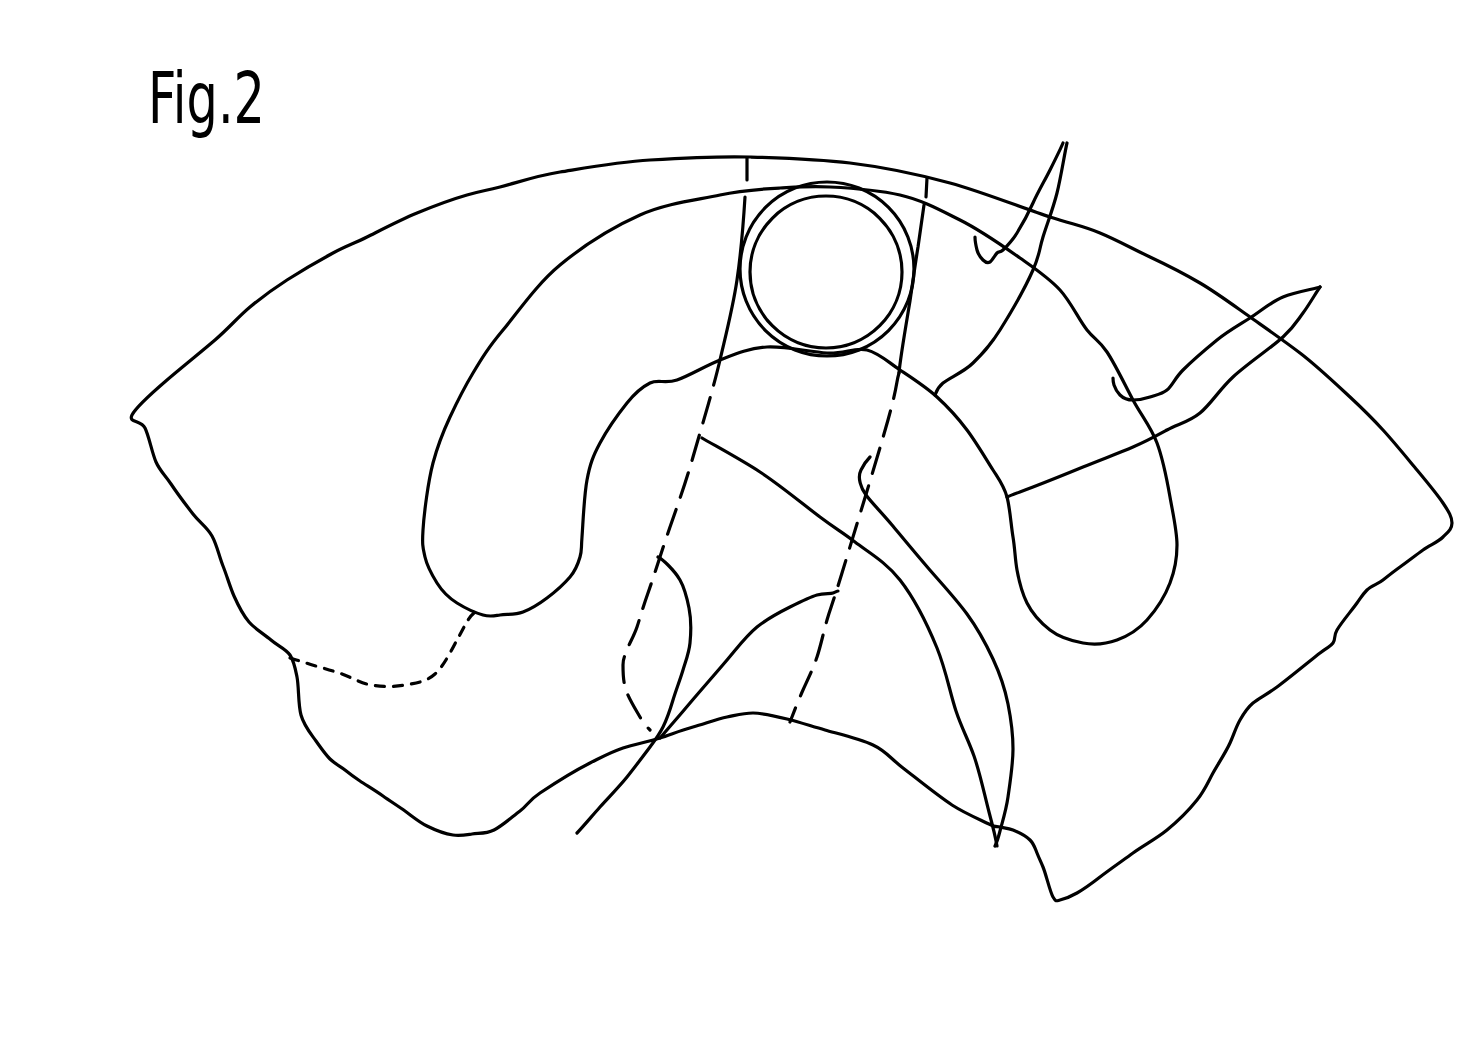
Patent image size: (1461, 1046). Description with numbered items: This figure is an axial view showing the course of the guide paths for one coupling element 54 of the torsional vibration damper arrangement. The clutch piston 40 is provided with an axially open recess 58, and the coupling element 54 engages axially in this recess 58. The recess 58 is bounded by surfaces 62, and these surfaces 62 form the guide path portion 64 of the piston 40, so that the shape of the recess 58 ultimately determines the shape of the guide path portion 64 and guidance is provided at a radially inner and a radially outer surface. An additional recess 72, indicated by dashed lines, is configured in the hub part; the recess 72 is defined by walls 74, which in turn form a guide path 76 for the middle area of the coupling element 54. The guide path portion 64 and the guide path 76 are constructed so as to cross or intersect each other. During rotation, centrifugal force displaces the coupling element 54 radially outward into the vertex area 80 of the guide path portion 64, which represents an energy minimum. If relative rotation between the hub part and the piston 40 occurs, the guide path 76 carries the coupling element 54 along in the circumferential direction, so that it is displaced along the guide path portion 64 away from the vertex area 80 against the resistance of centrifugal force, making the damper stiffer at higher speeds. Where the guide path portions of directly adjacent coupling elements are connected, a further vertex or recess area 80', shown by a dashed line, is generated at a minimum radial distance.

The clutch piston 40 is at (1177, 772).
The coupling element 54 is at (840, 223).
The recess 58 is at (1053, 363).
The surfaces of the recess 62 is at (1178, 364).
The guide path portion 64 is at (1017, 245).
The additional recess 72 is at (763, 657).
The walls 74 is at (660, 735).
The guide path 76 is at (936, 680).
The vertex area 80 is at (775, 395).
The vertex or recess area 80' is at (369, 732).